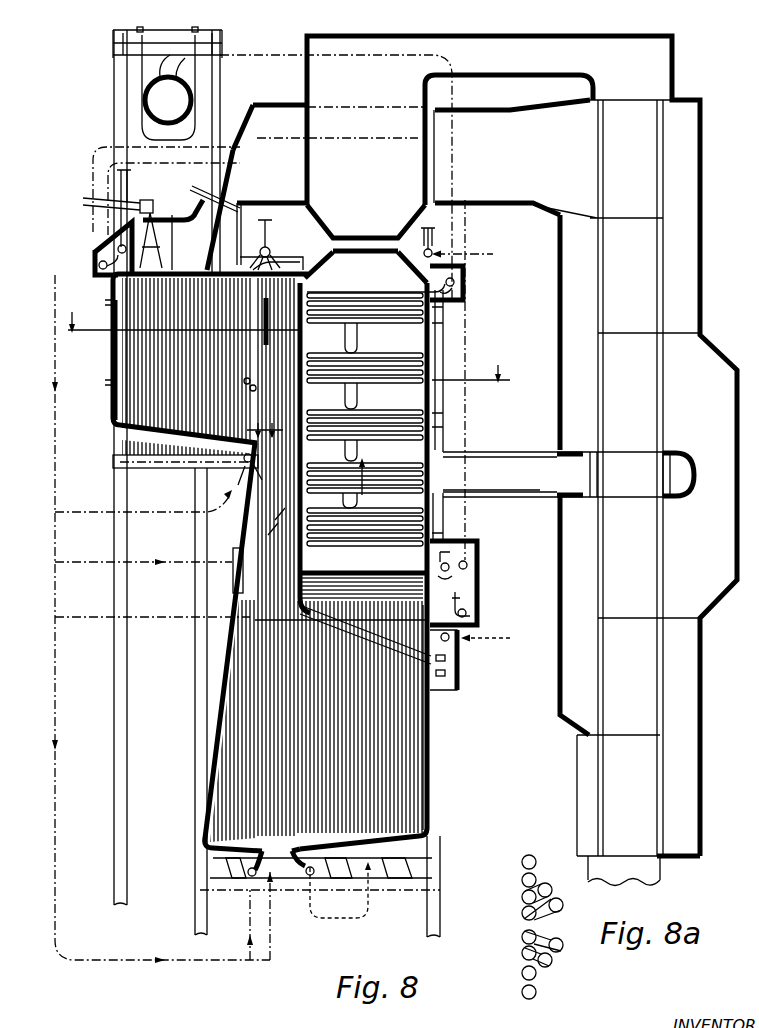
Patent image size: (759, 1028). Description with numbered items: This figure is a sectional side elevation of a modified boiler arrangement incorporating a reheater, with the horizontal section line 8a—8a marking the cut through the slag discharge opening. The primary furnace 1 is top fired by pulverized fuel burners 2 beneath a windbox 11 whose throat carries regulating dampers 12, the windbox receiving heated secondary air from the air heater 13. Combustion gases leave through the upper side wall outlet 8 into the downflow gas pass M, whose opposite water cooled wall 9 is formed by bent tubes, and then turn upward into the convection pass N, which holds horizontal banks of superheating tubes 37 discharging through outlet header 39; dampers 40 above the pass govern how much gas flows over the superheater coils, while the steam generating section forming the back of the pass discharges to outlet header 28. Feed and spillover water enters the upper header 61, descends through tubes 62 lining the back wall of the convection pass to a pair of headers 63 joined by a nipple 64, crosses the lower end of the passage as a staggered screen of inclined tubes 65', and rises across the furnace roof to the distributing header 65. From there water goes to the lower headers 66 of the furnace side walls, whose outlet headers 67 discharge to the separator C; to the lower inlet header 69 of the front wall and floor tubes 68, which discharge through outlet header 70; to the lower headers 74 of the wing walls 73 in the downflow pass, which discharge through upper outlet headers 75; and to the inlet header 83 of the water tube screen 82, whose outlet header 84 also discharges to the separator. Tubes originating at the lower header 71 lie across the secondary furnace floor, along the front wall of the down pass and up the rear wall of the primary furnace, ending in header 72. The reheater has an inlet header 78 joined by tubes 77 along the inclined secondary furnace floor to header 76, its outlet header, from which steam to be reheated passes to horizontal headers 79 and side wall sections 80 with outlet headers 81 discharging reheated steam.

The furnace 1 is at (198, 365).
The pulverized fuel burners 2 is at (150, 208).
The furnace outlet opening 8 is at (262, 300).
The section line 8a— 8a is at (278, 557).
The wall of the downflow gas pass 9 is at (281, 619).
The windbox 11 is at (173, 218).
The regulating dampers 12 is at (228, 210).
The air heater 13 is at (640, 425).
The outlet header 28 is at (464, 283).
The superheating tubes 37 is at (392, 386).
The superheater outlet header 39 is at (447, 563).
The gas outlet dampers 40 is at (365, 238).
The upper header 61 is at (433, 252).
The back wall tubes 62 is at (432, 445).
The pair of headers 63 is at (446, 676).
The nipple 64 is at (446, 659).
The distributing header 65 is at (96, 245).
The inclined tubes 65' is at (365, 642).
The lower headers of side walls 66 is at (160, 470).
The side wall outlet headers 67 is at (193, 262).
The front wall and floor tubes 68 is at (115, 334).
The lower inlet header 69 is at (247, 454).
The outlet header 70 is at (99, 266).
The lower header 71 is at (250, 878).
The header 72 is at (271, 253).
The wing walls 73 is at (285, 620).
The wing wall lower headers 74 is at (233, 570).
The wing wall upper outlet headers 75 is at (318, 266).
The reheater outlet header 76 is at (322, 889).
The secondary furnace floor tubes 77 is at (314, 647).
The reheater inlet header 78 is at (458, 630).
The horizontal headers 79 is at (433, 857).
The side wall sections 80 is at (380, 740).
The reheater outlet headers 81 is at (438, 538).
The water tube screen 82 is at (430, 590).
The screen inlet header 83 is at (466, 611).
The screen outlet header 84 is at (466, 564).
The separator C is at (168, 87).
The downflow gas pass M is at (274, 512).
The convection pass N is at (361, 486).